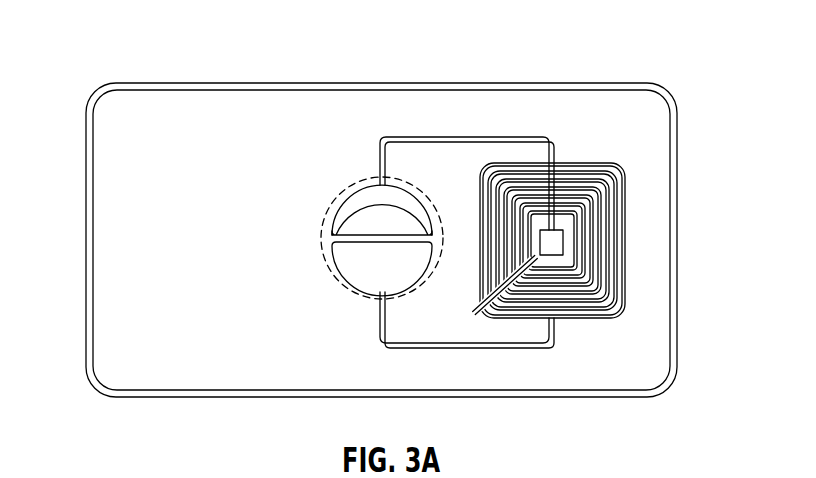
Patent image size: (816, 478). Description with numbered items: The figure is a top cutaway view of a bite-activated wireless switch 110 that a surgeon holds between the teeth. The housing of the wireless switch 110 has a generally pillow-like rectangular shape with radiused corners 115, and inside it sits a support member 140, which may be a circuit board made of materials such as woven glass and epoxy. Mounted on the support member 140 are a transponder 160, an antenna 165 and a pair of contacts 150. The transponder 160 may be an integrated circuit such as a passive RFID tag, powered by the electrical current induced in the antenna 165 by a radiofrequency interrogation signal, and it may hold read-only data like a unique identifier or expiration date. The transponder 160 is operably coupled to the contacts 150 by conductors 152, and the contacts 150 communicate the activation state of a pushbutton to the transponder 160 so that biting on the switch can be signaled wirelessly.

The bite-activated wireless switch 110 is at (190, 54).
The radiused corners 115 is at (100, 97).
The support member 140 is at (238, 361).
The contacts 150 is at (368, 212).
The conductors 152 is at (495, 137).
The transponder 160 is at (563, 247).
The antenna 165 is at (625, 193).